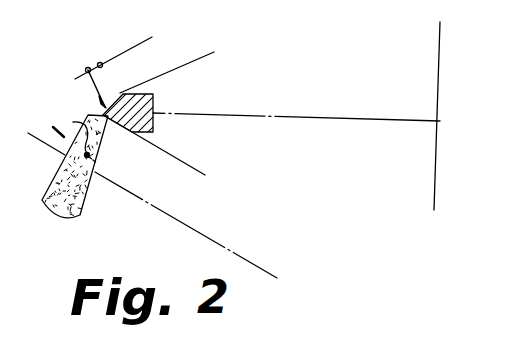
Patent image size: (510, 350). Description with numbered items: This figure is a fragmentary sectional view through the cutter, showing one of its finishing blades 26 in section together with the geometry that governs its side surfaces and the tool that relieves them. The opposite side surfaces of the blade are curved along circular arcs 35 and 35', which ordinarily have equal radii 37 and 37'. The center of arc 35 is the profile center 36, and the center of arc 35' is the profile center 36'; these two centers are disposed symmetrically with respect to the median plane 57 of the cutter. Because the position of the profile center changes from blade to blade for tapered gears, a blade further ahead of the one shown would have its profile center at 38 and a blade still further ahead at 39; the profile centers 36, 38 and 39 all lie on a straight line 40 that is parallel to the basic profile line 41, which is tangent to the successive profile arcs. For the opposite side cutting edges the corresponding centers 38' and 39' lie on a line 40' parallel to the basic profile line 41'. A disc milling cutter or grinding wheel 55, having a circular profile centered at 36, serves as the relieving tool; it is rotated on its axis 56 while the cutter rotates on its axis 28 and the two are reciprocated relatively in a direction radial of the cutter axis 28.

The support block 26 is at (153, 97).
The cutter axis 28 is at (436, 187).
The circular arc 35 is at (139, 152).
The circular arc 35' is at (144, 71).
The center of arc 36 is at (68, 133).
The center of arc 36' is at (59, 66).
The radius 37 is at (104, 148).
The radius 37' is at (85, 89).
The profile center 38 is at (76, 168).
The center 38' is at (76, 42).
The profile center 39 is at (105, 192).
The center 39' is at (118, 39).
The straight line 40 is at (158, 188).
The line 40' is at (127, 50).
The basic profile line 41 is at (161, 145).
The basic profile line 41' is at (176, 57).
The grinding wheel 55 is at (72, 219).
The axis 56 is at (208, 238).
The median plane 57 is at (350, 108).